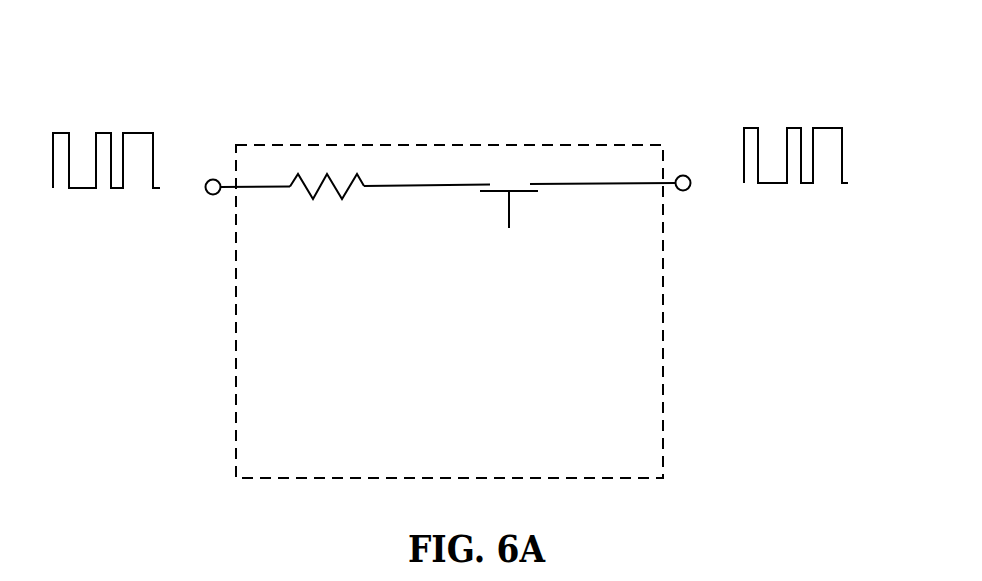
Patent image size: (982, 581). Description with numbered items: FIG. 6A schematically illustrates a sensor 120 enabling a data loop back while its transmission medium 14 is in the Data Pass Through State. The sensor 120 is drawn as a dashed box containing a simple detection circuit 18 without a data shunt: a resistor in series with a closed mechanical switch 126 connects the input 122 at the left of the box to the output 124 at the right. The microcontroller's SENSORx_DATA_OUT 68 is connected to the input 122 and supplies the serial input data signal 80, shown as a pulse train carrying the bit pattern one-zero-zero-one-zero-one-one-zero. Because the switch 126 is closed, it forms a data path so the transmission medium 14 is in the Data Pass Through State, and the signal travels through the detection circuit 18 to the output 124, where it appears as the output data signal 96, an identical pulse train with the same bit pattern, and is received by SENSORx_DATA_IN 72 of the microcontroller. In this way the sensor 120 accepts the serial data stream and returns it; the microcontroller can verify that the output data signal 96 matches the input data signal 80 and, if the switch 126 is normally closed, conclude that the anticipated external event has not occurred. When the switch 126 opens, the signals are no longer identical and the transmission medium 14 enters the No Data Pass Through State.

The transmission medium 14 is at (528, 207).
The detection circuit 18 is at (333, 214).
The SENSORx_DATA_OUT 68 is at (104, 80).
The SENSORx_DATA_IN 72 is at (809, 82).
The input data signal 80 is at (118, 188).
The output data signal 96 is at (808, 185).
The sensor 120 is at (367, 142).
The input 122 is at (214, 160).
The output 124 is at (686, 167).
The switch 126 is at (490, 193).